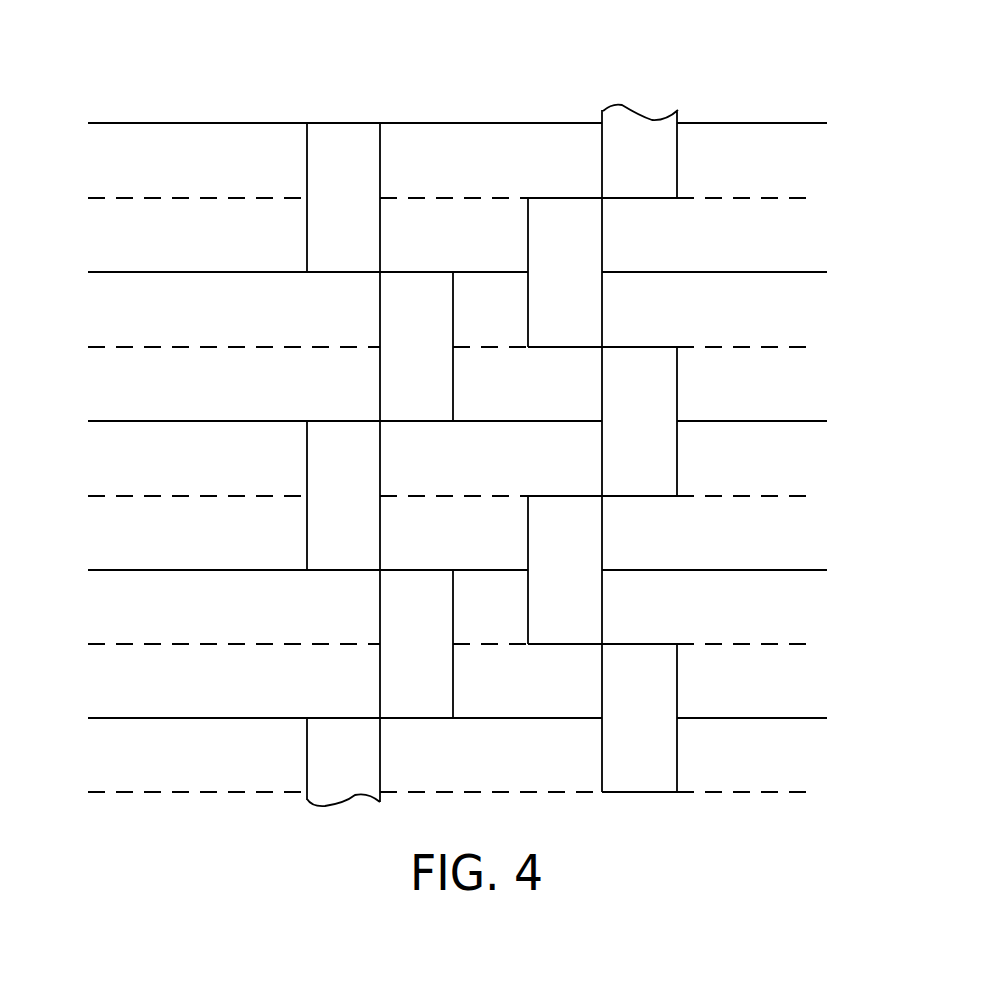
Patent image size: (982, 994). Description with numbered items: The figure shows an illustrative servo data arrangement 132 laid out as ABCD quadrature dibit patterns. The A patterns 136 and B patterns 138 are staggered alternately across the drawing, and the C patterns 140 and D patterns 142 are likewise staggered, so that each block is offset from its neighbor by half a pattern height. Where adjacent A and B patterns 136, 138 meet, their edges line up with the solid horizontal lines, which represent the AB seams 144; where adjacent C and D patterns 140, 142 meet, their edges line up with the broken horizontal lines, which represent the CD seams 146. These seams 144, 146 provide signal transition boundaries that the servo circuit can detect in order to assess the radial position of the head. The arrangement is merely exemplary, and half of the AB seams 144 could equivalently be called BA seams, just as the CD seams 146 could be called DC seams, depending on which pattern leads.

The weave pattern 132 is at (452, 74).
The A quadrature dibit pattern 136 is at (345, 132).
The B quadrature dibit pattern 138 is at (420, 282).
The C quadrature dibit pattern 140 is at (565, 207).
The D quadrature dibit pattern 142 is at (640, 125).
The AB seams 144 is at (152, 123).
The CD seams 146 is at (153, 197).